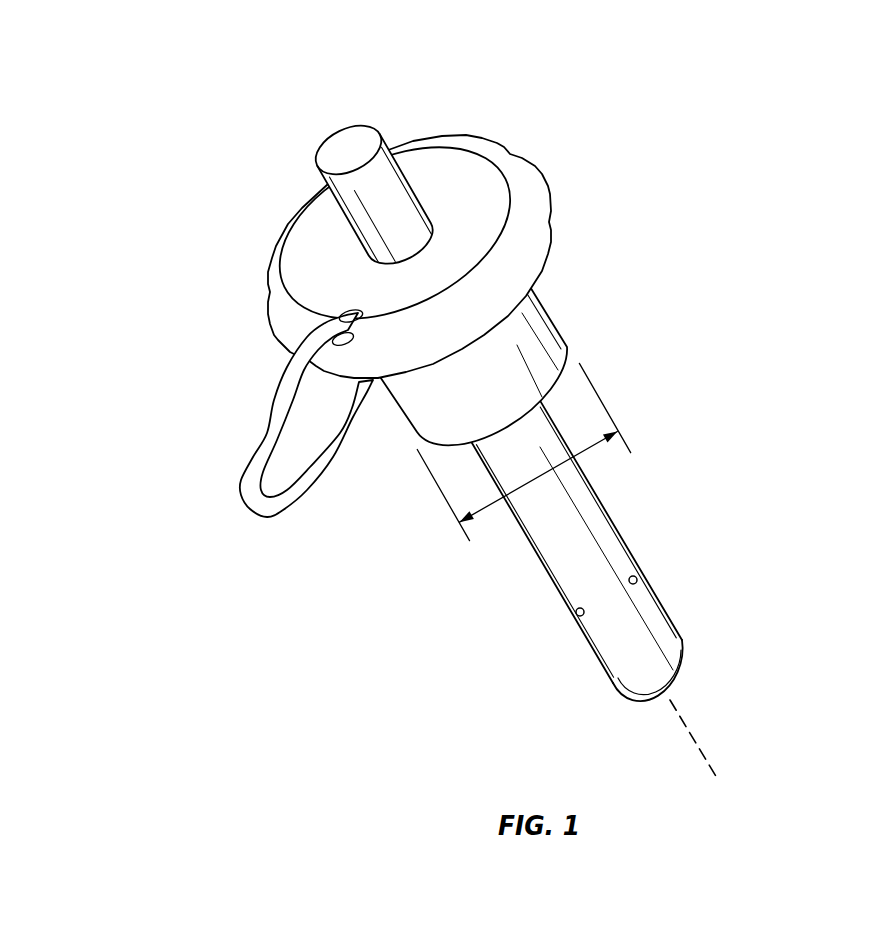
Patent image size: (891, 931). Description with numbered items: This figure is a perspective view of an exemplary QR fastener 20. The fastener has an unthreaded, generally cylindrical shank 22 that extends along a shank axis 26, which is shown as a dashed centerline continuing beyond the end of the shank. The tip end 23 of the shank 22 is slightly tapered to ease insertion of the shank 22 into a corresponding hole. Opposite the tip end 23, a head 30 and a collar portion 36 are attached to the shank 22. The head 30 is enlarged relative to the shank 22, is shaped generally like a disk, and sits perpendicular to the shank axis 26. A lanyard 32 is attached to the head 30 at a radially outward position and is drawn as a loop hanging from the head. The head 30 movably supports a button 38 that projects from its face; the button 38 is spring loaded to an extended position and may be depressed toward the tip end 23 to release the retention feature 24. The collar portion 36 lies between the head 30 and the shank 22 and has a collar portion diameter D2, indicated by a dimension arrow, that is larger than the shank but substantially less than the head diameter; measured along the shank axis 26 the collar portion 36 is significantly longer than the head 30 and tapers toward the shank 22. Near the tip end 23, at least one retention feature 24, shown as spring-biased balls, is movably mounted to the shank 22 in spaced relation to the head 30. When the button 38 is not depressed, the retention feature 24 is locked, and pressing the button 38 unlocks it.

The QR fastener 20 is at (511, 418).
The shank 22 is at (593, 525).
The tip end 23 is at (641, 702).
The retention feature 24 is at (587, 613).
The shank axis 26 is at (700, 742).
The head 30 is at (465, 168).
The lanyard 32 is at (262, 445).
The collar portion 36 is at (537, 360).
The button 38 is at (353, 147).
The collar portion diameter D2 is at (488, 512).